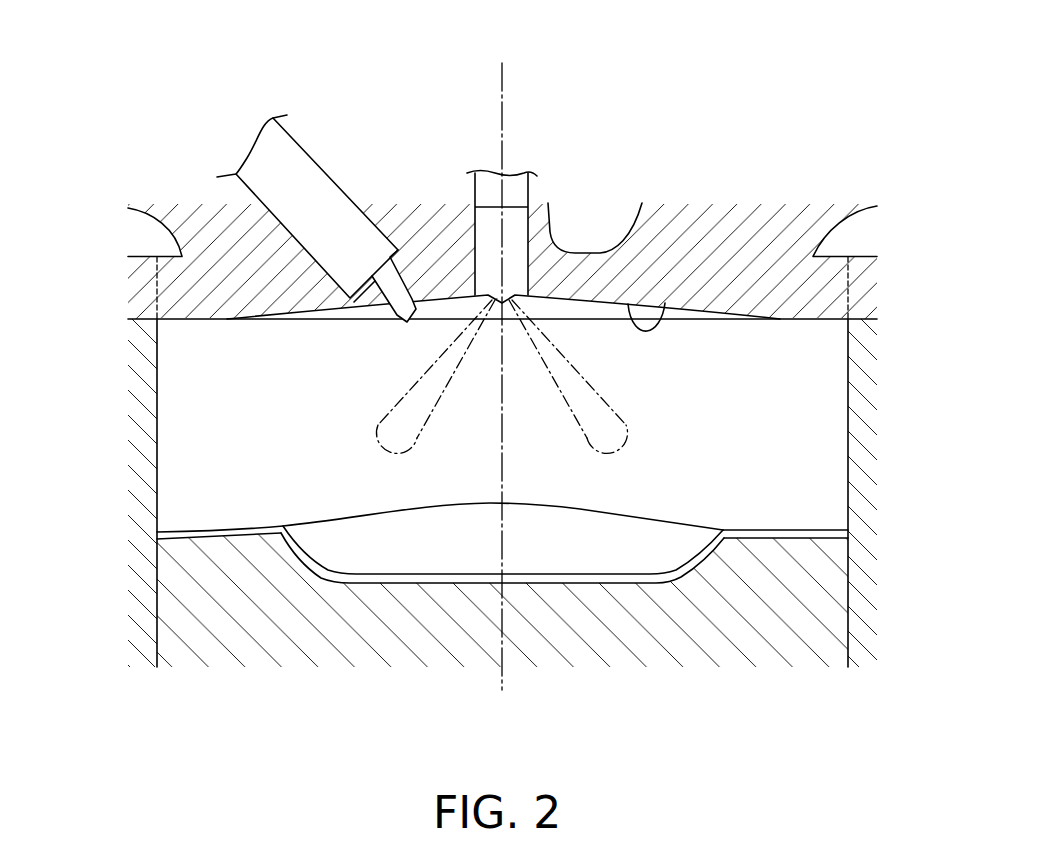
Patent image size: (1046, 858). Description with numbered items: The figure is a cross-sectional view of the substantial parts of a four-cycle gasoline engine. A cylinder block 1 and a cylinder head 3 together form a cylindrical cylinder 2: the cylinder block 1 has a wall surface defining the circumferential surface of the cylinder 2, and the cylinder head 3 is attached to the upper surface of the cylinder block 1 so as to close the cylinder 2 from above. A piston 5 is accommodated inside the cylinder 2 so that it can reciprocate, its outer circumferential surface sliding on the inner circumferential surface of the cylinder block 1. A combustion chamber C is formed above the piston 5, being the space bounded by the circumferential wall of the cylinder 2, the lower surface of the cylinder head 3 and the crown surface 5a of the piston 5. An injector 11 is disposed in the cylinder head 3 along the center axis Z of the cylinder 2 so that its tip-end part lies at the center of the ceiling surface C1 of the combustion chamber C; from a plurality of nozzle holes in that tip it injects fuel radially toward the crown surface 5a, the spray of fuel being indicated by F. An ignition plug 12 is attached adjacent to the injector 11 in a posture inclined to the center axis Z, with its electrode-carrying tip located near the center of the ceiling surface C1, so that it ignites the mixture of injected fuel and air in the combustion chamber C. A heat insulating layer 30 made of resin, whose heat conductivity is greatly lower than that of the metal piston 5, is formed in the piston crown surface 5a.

The cylinder block 1 is at (145, 473).
The cylinder 2 is at (848, 372).
The cylinder head 3 is at (147, 282).
The piston 5 is at (175, 585).
The crown surface 5a is at (813, 533).
The injector 11 is at (487, 233).
The ignition plug 12 is at (332, 167).
The heat insulating layer 30 is at (367, 573).
The combustion chamber C is at (200, 400).
The ceiling surface C1 is at (666, 303).
The spray of fuel F is at (618, 416).
The center axis Z is at (502, 89).